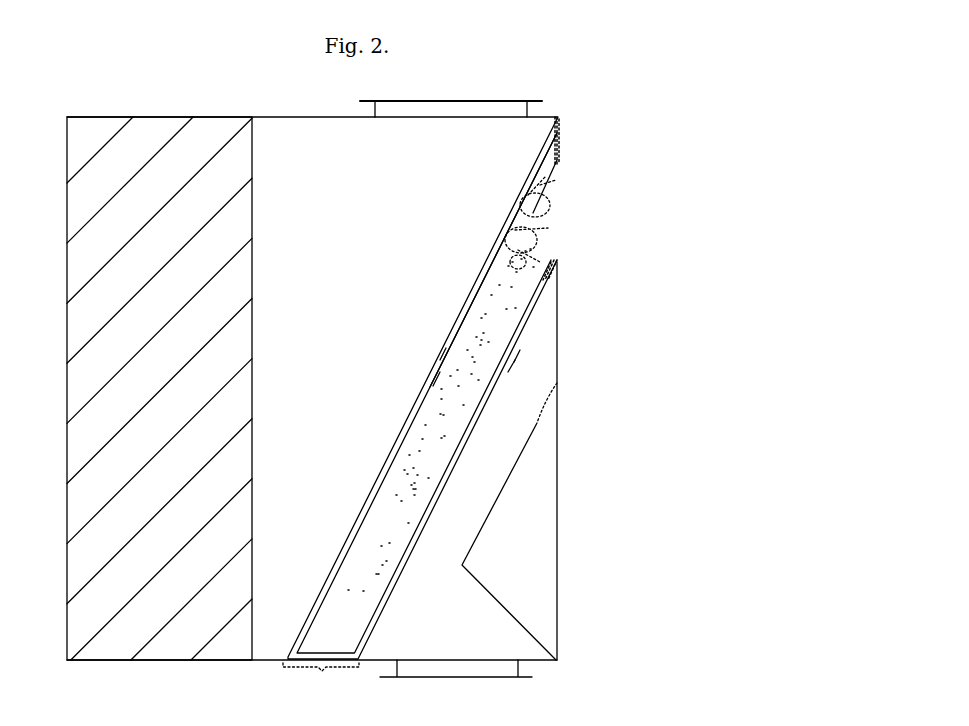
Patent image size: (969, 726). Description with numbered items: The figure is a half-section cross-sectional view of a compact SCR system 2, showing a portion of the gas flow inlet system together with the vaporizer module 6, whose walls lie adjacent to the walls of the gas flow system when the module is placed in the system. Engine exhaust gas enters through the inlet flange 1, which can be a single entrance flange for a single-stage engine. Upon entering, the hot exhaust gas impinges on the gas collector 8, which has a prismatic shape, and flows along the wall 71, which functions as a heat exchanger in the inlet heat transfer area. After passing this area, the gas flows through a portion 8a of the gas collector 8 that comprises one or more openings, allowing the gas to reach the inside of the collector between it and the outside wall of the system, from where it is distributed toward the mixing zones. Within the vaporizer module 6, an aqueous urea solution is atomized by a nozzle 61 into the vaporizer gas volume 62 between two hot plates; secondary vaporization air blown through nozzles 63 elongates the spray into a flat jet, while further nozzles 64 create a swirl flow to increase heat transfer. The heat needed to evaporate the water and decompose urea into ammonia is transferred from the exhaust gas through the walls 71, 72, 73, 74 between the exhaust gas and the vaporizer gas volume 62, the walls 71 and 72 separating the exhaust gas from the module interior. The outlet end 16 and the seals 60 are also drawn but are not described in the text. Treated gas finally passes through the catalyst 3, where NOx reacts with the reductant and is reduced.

The inlet flange 1 is at (344, 473).
The compact SCR system 2 is at (312, 99).
The catalyst 3 is at (159, 388).
The vaporizer module 6 is at (464, 390).
The gas collector 8 is at (535, 521).
The portion of the gas collector 8a is at (572, 414).
The duct outlet end 16 is at (321, 681).
The seal 60 is at (587, 180).
The nozzle 61 is at (493, 260).
The vaporizer gas volume 62 is at (413, 420).
The nozzles 63 is at (582, 189).
The nozzles 64 is at (575, 243).
The wall 71 is at (571, 355).
The wall 72 is at (397, 388).
The wall 73 is at (577, 338).
The wall 74 is at (400, 364).